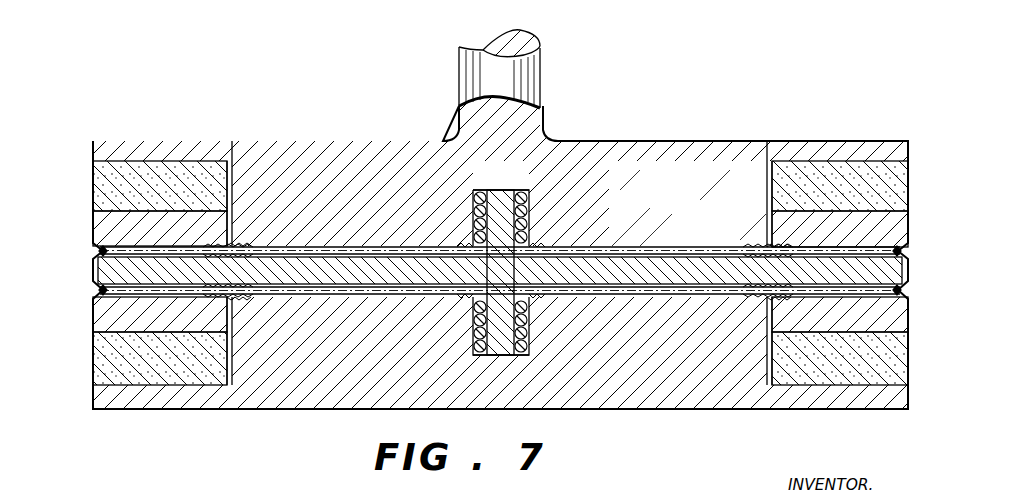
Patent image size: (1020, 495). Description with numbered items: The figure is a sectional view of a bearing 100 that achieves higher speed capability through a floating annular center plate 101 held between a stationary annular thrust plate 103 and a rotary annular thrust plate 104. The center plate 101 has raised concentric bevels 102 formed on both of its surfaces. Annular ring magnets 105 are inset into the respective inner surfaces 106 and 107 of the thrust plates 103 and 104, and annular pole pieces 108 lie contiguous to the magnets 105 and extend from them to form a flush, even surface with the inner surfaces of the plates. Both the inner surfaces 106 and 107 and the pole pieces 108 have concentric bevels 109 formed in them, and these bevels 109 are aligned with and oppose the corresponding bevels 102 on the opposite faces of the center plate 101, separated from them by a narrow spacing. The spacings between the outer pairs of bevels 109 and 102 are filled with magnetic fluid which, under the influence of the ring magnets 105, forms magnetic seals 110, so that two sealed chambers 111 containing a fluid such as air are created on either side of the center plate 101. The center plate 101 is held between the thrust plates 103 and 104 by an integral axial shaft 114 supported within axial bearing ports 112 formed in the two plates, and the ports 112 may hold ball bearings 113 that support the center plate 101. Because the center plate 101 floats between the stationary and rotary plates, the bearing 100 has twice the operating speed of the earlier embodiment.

The bearing 100 is at (574, 126).
The floating annular center plate 101 is at (395, 280).
The raised concentric bevels 102 is at (465, 258).
The stationary annular thrust plate 103 is at (500, 368).
The rotary annular thrust plate 104 is at (297, 141).
The annular ring magnets 105 is at (179, 203).
The inner surface 106 is at (330, 293).
The inner surface 107 is at (307, 248).
The annular pole pieces 108 is at (179, 234).
The concentric bevels 109 is at (245, 246).
The magnetic seals 110 is at (102, 250).
The sealed chambers 111 is at (368, 247).
The axial bearing ports 112 is at (528, 227).
The ball bearings 113 is at (518, 355).
The integral axial shaft 114 is at (495, 197).